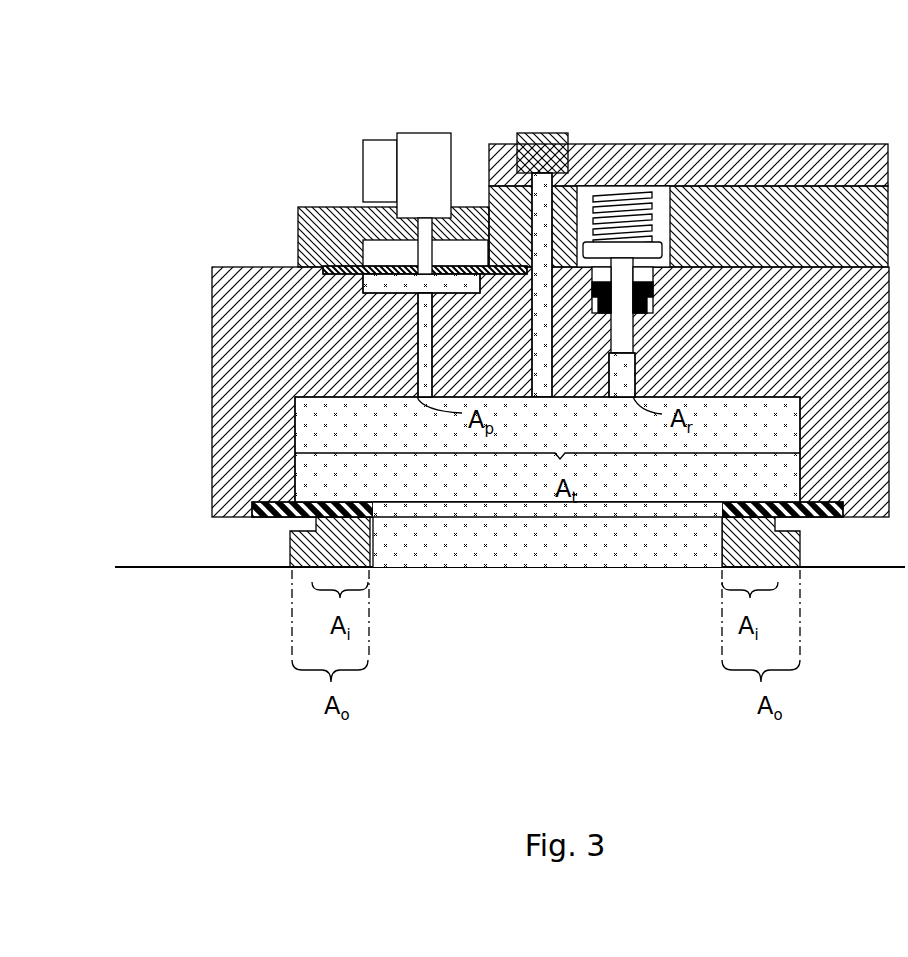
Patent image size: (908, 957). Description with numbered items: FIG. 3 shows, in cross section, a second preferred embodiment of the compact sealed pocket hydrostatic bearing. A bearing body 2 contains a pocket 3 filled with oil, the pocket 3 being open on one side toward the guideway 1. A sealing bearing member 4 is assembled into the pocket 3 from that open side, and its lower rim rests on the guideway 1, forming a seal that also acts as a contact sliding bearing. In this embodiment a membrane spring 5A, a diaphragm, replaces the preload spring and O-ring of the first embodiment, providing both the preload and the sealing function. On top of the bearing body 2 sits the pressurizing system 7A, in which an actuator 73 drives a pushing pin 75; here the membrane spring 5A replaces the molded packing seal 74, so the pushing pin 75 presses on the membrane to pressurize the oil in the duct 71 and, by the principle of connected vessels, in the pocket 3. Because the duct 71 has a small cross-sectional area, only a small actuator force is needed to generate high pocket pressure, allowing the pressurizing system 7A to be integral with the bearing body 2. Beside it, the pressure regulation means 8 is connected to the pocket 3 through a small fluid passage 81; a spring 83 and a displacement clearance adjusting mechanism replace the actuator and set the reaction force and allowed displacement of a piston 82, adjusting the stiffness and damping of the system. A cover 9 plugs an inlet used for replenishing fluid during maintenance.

The guideway 1 is at (145, 565).
The bearing body 2 is at (207, 330).
The pocket 3 is at (457, 475).
The sealing bearing member 4 is at (285, 545).
The membrane spring 5A is at (290, 500).
The pressurizing system 7A is at (334, 179).
The duct 71 is at (415, 372).
The actuator 73 is at (397, 177).
The molded packing seal 74 is at (393, 263).
The pushing pin 75 is at (417, 257).
The pressure regulation means 8 is at (689, 139).
The small fluid passage 81 is at (630, 345).
The piston 82 is at (655, 290).
The spring 83 is at (660, 207).
The cover 9 is at (543, 120).